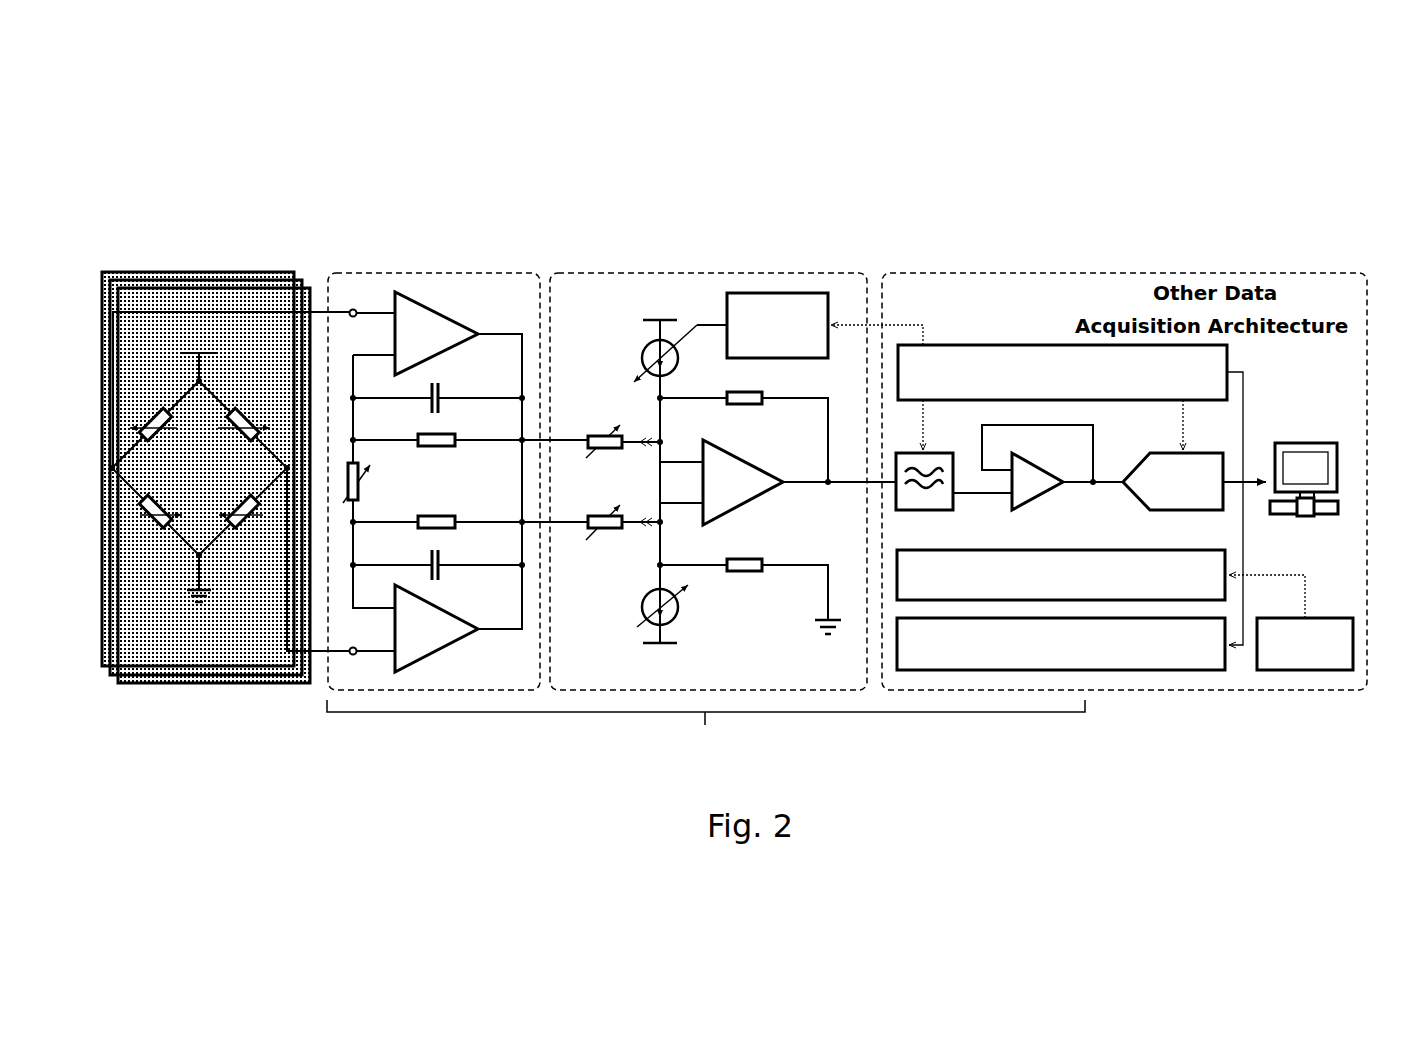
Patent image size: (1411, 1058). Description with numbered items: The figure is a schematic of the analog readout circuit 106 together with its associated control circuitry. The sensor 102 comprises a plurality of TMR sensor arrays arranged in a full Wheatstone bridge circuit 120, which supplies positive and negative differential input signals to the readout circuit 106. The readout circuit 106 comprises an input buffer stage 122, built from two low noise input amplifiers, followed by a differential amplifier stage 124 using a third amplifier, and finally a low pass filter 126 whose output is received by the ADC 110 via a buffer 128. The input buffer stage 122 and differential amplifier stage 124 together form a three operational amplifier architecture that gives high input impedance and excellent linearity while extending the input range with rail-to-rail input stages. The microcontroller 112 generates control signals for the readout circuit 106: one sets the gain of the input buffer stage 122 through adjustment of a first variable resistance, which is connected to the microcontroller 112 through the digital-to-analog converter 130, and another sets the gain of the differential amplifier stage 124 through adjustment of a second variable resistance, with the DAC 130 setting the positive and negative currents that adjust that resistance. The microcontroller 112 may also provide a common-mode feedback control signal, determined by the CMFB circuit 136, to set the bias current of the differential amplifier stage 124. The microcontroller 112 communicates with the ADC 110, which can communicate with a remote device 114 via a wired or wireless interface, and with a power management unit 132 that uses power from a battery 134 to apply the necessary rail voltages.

The sensor 102 is at (232, 432).
The analog readout circuit 106 is at (706, 731).
The ADC 110 is at (1163, 602).
The microcontroller 112 is at (1043, 345).
The remote device 114 is at (1338, 490).
The full Wheatstone bridge circuit 120 is at (191, 537).
The input buffer stage 122 is at (438, 690).
The differential amplifier stage 124 is at (723, 504).
The low pass filter 126 is at (952, 512).
The buffer 128 is at (1060, 497).
The digital-to-analog converter 130 is at (788, 293).
The power management unit 132 is at (1185, 512).
The battery 134 is at (1320, 672).
The CMFB circuit 136 is at (1103, 672).